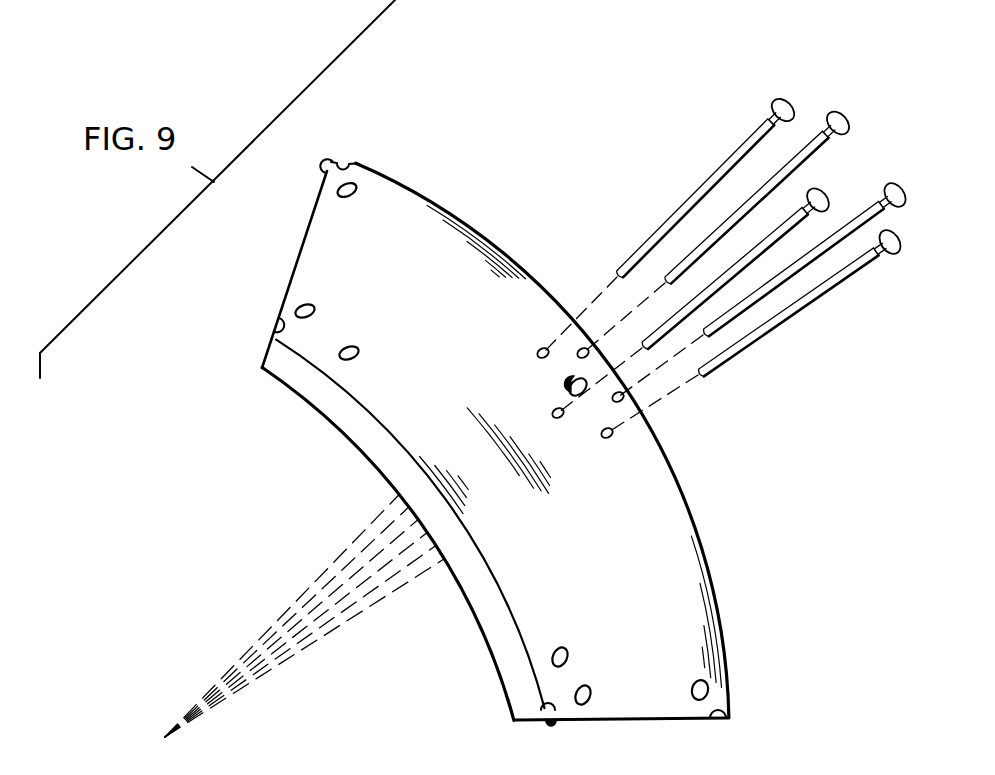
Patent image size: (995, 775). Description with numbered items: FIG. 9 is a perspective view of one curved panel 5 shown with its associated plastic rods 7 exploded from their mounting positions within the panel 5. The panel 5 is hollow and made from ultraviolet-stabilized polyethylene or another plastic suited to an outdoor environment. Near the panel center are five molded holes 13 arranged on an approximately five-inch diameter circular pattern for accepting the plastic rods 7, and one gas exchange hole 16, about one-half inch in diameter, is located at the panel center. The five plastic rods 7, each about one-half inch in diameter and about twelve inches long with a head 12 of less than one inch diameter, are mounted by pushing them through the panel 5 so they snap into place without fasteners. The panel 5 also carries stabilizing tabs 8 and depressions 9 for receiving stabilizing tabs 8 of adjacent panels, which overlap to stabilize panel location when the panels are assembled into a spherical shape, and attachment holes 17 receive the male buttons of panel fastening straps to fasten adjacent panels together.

The panel 5 is at (428, 206).
The plastic rods 7 is at (731, 161).
The stabilizing tabs 8 is at (319, 165).
The depressions 9 is at (276, 323).
The head 12 is at (790, 103).
The molded holes 13 is at (584, 346).
The gas exchange hole 16 is at (570, 383).
The attachment holes 17 is at (706, 688).